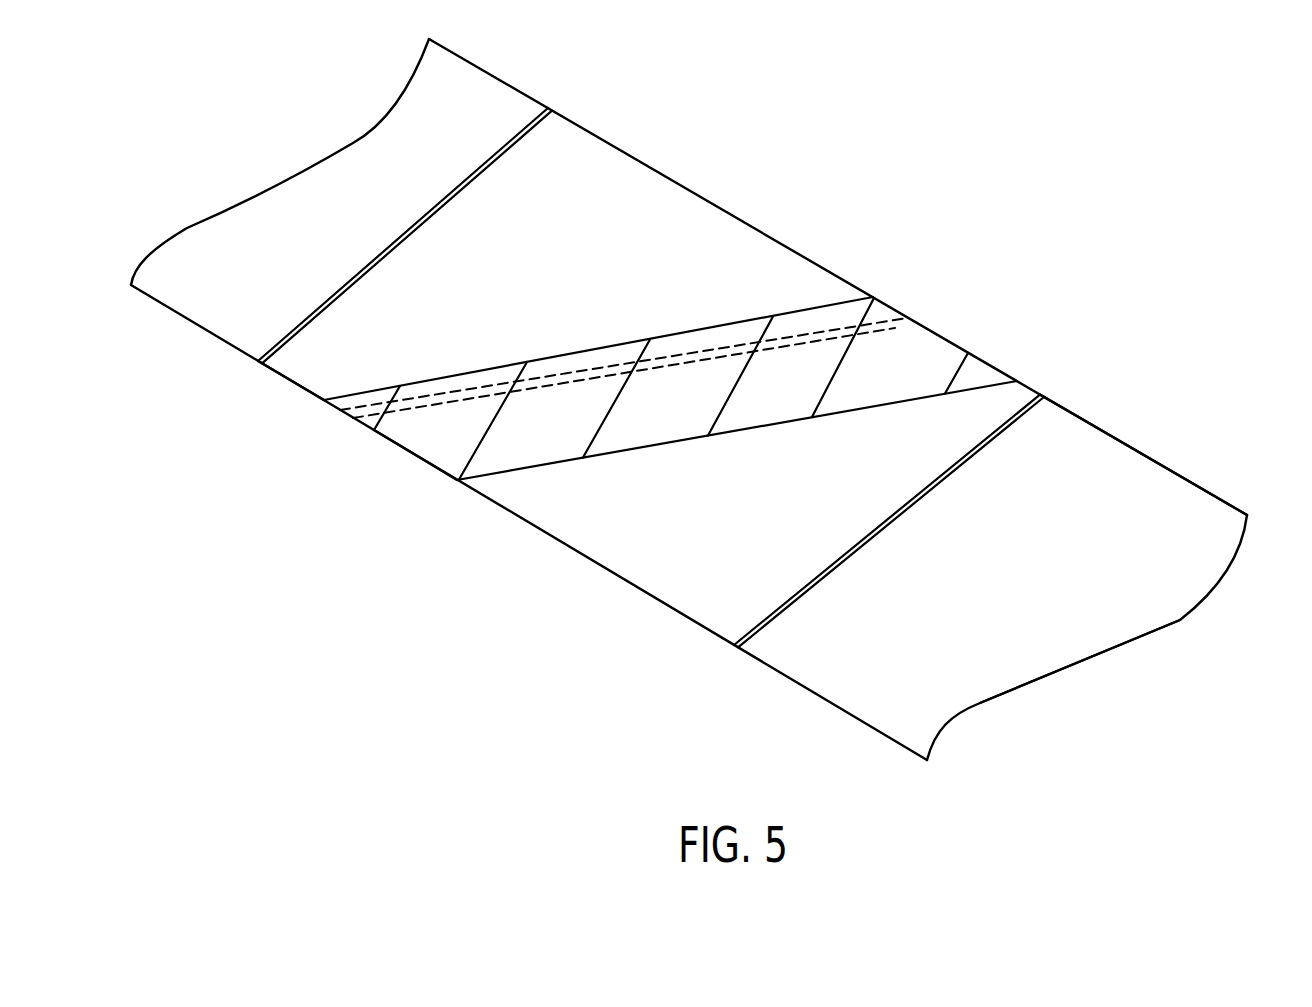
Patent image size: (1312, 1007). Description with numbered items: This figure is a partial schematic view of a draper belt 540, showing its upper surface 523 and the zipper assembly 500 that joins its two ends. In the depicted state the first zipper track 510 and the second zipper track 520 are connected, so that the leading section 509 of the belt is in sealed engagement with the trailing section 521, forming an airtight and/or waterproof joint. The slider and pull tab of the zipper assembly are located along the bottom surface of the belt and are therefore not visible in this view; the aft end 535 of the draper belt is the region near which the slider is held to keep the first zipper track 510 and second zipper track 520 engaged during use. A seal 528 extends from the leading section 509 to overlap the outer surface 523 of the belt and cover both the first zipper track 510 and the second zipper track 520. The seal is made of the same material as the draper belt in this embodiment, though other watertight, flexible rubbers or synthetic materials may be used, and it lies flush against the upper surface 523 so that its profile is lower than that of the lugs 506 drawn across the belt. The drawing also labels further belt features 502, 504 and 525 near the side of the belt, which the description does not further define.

The zipper assembly 500 is at (701, 401).
The first layer 502 is at (400, 446).
The second layer 504 is at (300, 386).
The lugs 506 is at (501, 147).
The leading section 509 is at (1093, 455).
The first zipper track 510 is at (887, 320).
The second zipper track 520 is at (837, 323).
The trailing section 521 is at (329, 183).
The upper surface 523 is at (987, 688).
The side edge 525 is at (193, 322).
The seal 528 is at (847, 357).
The aft end 535 is at (1210, 493).
The draper belt 540 is at (1218, 615).